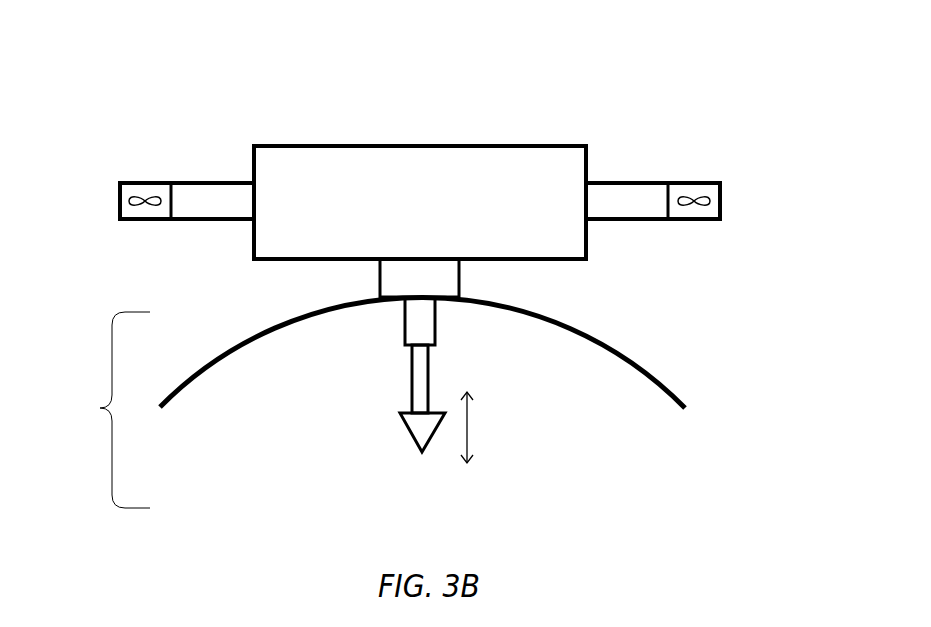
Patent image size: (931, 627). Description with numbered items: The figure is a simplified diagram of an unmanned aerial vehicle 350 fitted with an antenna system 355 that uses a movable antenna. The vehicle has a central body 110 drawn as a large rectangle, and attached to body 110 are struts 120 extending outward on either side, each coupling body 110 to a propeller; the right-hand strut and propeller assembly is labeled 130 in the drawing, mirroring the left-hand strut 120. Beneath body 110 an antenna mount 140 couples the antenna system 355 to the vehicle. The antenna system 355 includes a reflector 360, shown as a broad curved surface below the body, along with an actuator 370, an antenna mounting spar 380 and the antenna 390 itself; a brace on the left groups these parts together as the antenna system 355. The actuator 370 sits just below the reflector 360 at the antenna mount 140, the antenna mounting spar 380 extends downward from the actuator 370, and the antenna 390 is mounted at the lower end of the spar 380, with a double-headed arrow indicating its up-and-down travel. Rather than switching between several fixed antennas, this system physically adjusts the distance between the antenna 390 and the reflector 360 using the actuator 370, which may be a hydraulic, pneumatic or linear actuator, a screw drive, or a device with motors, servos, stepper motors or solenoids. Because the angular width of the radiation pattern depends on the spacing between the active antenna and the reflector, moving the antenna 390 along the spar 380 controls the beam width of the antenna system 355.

The central body 110 is at (397, 145).
The strut 120 is at (210, 183).
The right arm with propeller 130 is at (703, 183).
The antenna mount 140 is at (459, 282).
The unmanned aerial vehicle 350 is at (660, 92).
The antenna system 355 is at (98, 410).
The reflector 360 is at (650, 372).
The actuator 370 is at (405, 330).
The antenna mounting spar 380 is at (428, 378).
The antenna 390 is at (400, 428).